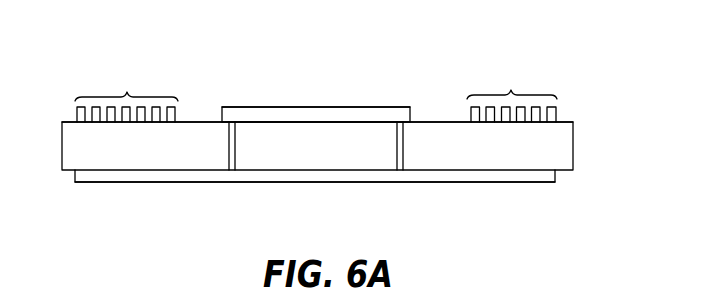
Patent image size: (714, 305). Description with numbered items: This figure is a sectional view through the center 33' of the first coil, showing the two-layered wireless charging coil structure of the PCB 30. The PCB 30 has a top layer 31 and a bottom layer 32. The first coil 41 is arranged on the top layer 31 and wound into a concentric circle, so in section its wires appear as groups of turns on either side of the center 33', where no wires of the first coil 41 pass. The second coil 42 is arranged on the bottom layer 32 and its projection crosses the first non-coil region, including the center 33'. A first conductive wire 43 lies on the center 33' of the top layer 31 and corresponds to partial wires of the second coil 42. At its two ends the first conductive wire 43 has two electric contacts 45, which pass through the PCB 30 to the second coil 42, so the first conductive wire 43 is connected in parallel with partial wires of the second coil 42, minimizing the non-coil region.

The PCB 30 is at (108, 157).
The top layer 31 is at (197, 121).
The bottom layer 32 is at (498, 170).
The center of the first coil 33' is at (329, 64).
The first coil 41 is at (316, 93).
The second coil 42 is at (265, 172).
The first conductive wire 43 is at (302, 107).
The electric contact 45 is at (237, 148).